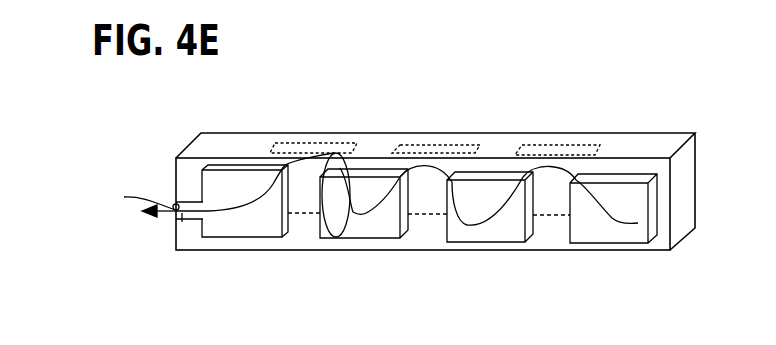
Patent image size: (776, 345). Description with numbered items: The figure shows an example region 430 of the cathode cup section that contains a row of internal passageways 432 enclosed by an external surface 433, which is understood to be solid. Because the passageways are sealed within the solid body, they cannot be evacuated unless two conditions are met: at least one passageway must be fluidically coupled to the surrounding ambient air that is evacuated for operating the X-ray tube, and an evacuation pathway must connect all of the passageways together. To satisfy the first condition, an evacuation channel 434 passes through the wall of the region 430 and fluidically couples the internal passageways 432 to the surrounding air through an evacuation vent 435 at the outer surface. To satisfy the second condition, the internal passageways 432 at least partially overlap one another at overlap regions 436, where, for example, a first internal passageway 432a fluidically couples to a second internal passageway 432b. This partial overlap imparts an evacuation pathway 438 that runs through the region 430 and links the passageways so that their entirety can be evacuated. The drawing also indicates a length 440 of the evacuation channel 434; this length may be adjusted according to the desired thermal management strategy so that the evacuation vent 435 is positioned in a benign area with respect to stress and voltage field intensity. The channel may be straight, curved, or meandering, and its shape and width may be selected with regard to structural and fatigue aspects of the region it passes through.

The region 430 is at (678, 80).
The internal passageways 432 is at (420, 152).
The first internal passageway 432a is at (373, 228).
The second internal passageway 432b is at (320, 151).
The external surface 433 is at (670, 142).
The evacuation channel 434 is at (177, 203).
The evacuation vent 435 is at (135, 202).
The overlap regions 436 is at (324, 232).
The evacuation pathway 438 is at (615, 226).
The length 440 is at (178, 220).